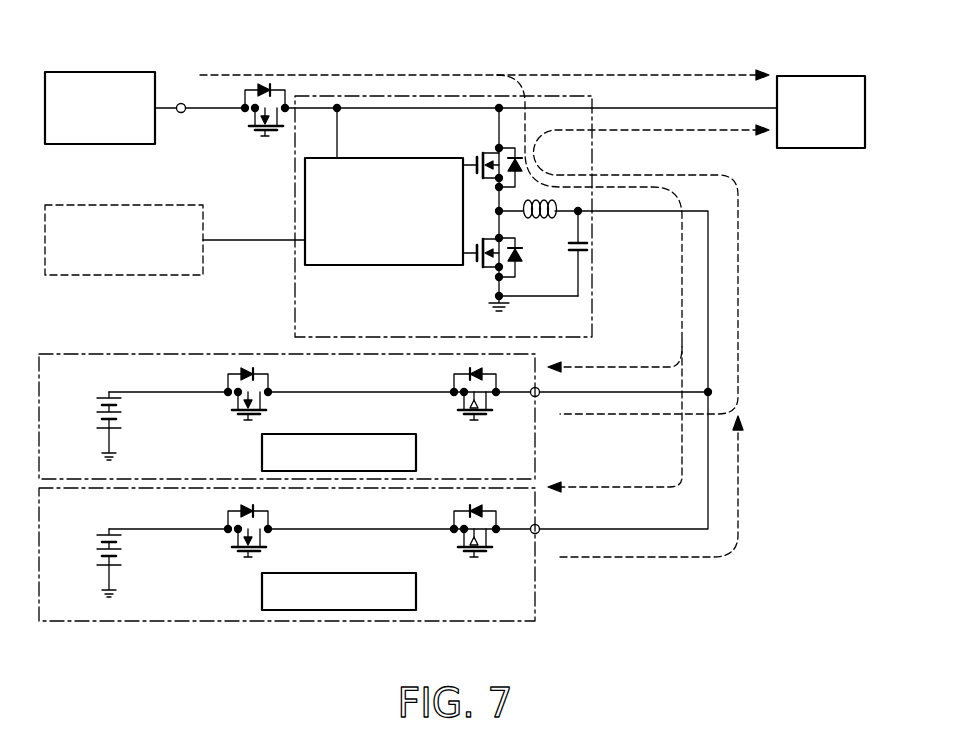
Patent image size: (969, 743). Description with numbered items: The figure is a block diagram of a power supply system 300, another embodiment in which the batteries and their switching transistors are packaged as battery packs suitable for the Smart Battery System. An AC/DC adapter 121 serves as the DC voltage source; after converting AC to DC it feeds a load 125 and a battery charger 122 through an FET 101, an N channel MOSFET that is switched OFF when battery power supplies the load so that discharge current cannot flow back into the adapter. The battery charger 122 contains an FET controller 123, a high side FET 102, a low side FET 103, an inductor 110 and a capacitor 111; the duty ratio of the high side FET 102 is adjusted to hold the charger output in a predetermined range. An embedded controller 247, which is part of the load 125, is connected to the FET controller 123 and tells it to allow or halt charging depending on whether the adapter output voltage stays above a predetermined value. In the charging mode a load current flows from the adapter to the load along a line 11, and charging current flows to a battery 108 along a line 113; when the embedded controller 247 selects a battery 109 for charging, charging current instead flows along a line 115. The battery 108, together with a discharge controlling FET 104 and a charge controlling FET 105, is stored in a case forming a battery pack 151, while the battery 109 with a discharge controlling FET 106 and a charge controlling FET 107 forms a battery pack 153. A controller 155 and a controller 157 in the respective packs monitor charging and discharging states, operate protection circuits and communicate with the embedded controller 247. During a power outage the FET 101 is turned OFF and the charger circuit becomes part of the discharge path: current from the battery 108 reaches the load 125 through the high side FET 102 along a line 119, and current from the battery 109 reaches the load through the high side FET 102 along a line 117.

The power supply system 300 is at (291, 32).
The AC/DC adapter 121 is at (139, 73).
The battery charger 122 is at (402, 95).
The FET controller 123 is at (302, 201).
The embedded controller 247 is at (139, 205).
The load 125 is at (822, 76).
The line 11 is at (662, 75).
The FET FET101 is at (245, 113).
The high side FET FET102 is at (469, 153).
The low side FET FET103 is at (471, 275).
The inductor 110 is at (537, 228).
The capacitor 111 is at (587, 257).
The line 113 is at (622, 364).
The line 115 is at (617, 484).
The line 117 is at (741, 503).
The line 119 is at (741, 262).
The battery pack 151 is at (118, 354).
The battery pack 153 is at (137, 622).
The battery 108 is at (90, 401).
The battery 109 is at (90, 538).
The controller 155 is at (345, 434).
The controller 157 is at (345, 573).
The discharge controlling FET FET104 is at (491, 424).
The charge controlling FET FET105 is at (228, 418).
The discharge controlling FET FET106 is at (491, 561).
The charge controlling FET FET107 is at (228, 555).